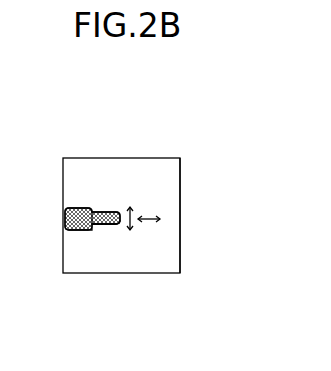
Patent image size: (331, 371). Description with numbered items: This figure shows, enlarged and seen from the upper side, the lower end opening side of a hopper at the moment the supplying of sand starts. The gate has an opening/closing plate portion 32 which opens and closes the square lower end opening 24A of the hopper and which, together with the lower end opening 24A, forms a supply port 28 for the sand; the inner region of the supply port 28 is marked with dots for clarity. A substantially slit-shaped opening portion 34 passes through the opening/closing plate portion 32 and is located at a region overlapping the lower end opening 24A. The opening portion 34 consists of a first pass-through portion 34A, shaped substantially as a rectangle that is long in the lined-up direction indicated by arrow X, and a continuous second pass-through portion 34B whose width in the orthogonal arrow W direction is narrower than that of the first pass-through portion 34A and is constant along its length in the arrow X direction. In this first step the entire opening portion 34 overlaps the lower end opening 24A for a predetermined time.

The opening/closing plate portion 32 is at (124, 172).
The opening portion 34 is at (86, 208).
The first pass-through portion 34A is at (76, 231).
The second pass-through portion 34B is at (97, 231).
The supply port 28 is at (116, 225).
The lower end opening 24A is at (179, 218).
The arrow X direction X is at (152, 212).
The arrow W direction W is at (141, 226).